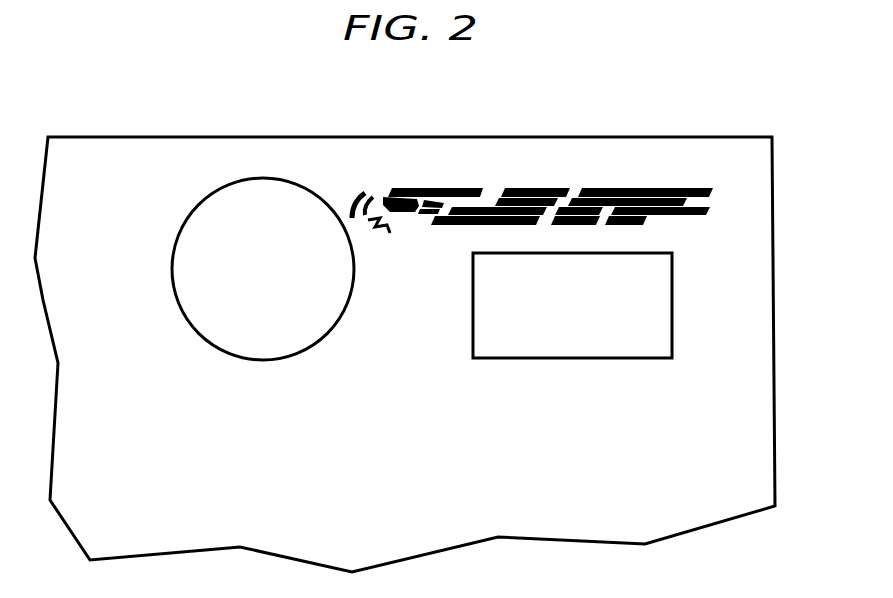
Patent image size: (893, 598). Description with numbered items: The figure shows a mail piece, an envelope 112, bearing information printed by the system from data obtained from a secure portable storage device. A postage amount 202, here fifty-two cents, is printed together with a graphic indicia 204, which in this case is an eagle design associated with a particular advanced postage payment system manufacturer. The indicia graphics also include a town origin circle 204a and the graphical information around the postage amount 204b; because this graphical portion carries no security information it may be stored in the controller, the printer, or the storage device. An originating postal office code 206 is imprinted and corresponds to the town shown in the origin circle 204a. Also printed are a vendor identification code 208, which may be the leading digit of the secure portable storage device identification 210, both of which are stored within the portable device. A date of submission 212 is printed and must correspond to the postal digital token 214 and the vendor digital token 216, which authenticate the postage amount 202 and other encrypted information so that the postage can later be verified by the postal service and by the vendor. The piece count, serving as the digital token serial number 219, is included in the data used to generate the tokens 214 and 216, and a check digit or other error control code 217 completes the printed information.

The envelope 112 is at (613, 114).
The graphic indicia 204 is at (540, 185).
The town origin circle 204a is at (234, 265).
The graphical information around the postage amount 204b is at (616, 299).
The postage amount 202 is at (604, 281).
The digital token serial number 219 is at (382, 273).
The date of submission 212 is at (230, 290).
The originating postal office code 206 is at (285, 404).
The vendor identification code 208 is at (302, 401).
The secure portable storage device identification 210 is at (477, 404).
The postal digital token 214 is at (560, 404).
The vendor digital token 216 is at (622, 404).
The check digit 217 is at (660, 393).